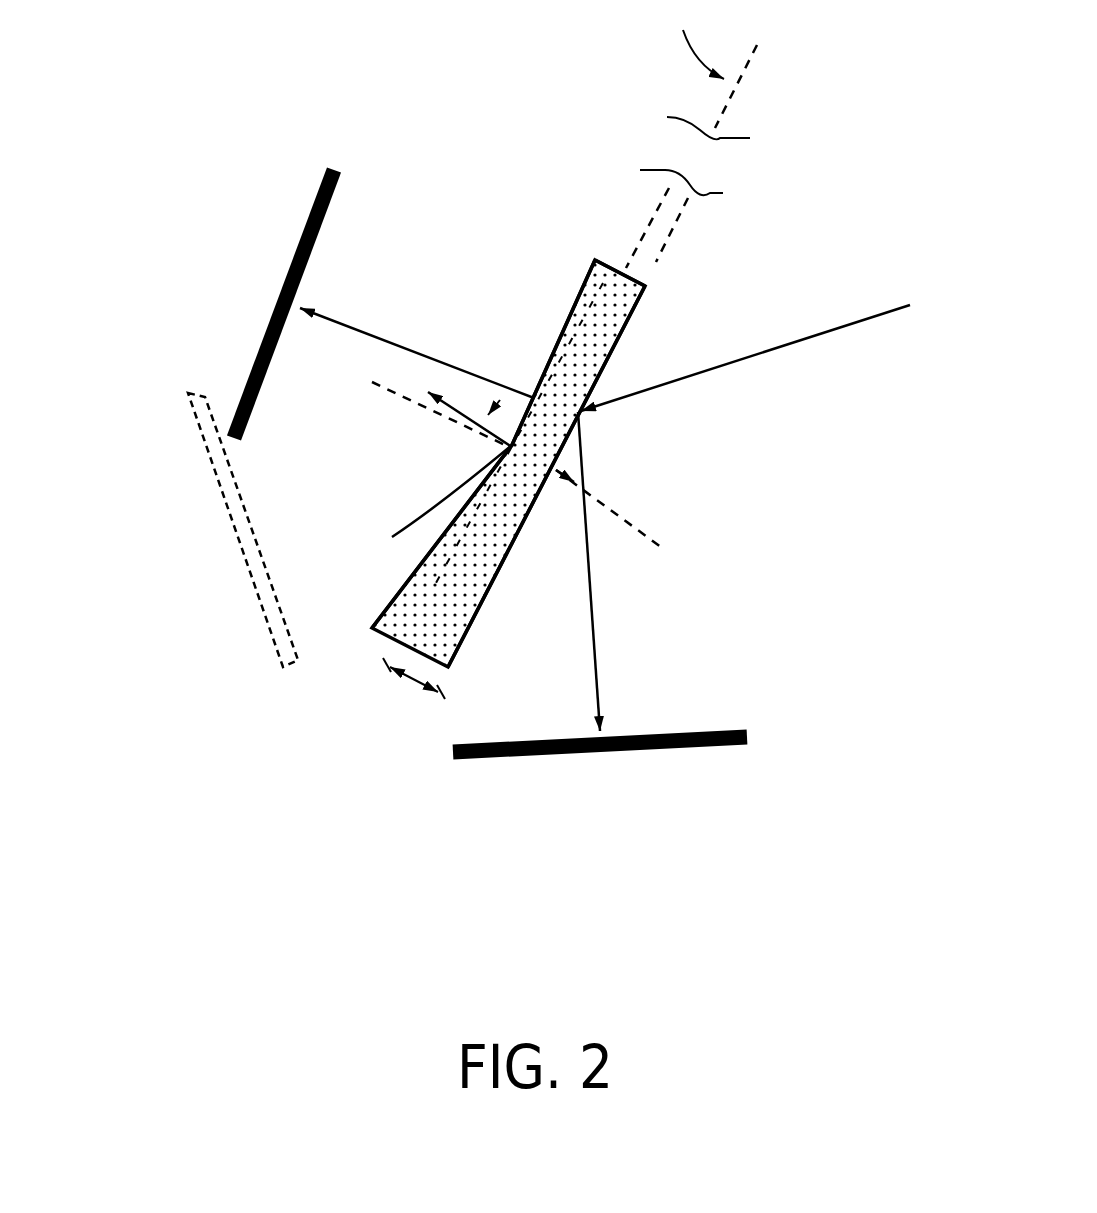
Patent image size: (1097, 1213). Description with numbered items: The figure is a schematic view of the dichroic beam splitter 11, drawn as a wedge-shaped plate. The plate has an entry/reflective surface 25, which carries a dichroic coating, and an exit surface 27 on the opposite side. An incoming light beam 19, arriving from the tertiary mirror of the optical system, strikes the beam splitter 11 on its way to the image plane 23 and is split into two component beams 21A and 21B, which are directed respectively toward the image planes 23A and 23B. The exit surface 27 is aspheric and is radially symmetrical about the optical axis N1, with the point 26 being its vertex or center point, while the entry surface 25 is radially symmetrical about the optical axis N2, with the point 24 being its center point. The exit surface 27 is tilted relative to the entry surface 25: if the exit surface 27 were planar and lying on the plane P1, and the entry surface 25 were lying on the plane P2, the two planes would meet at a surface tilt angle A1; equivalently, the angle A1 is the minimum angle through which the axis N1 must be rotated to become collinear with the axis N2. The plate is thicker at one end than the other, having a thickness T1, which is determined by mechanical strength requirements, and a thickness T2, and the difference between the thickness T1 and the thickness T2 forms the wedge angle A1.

The dichroic beam splitter 11 is at (757, 205).
The light beam 19 is at (886, 316).
The component beam 21A is at (373, 334).
The component beam 21B is at (593, 604).
The image plane 23 is at (198, 427).
The image plane 23A is at (322, 222).
The image plane 23B is at (713, 728).
The center point 24 is at (562, 466).
The entry/reflective surface 25 is at (474, 630).
The vertex/center point 26 is at (692, 302).
The exit surface 27 is at (390, 597).
The surface tilt angle A1 is at (475, 438).
The optical axis N1 is at (460, 421).
The optical axis N2 is at (556, 470).
The plane P1 is at (720, 102).
The plane P2 is at (728, 107).
The thickness T1 is at (638, 264).
The thickness T2 is at (408, 682).